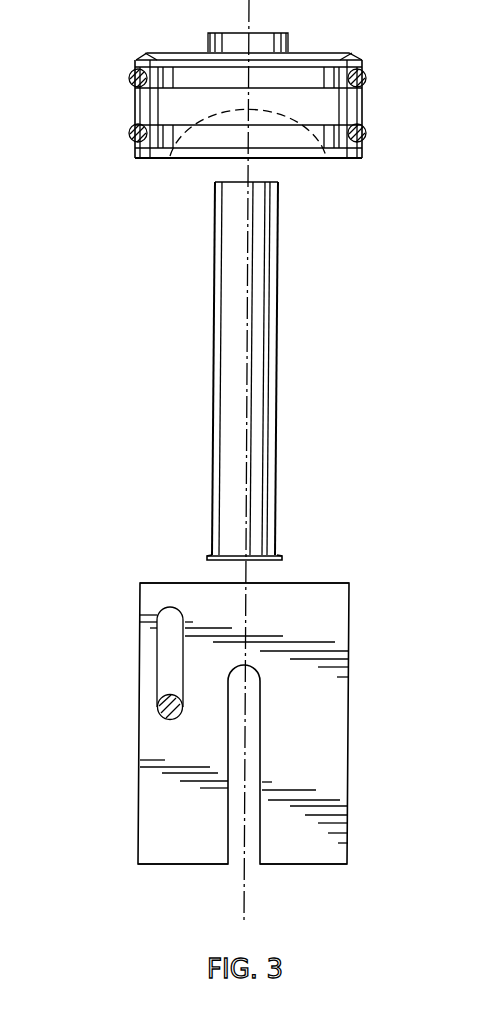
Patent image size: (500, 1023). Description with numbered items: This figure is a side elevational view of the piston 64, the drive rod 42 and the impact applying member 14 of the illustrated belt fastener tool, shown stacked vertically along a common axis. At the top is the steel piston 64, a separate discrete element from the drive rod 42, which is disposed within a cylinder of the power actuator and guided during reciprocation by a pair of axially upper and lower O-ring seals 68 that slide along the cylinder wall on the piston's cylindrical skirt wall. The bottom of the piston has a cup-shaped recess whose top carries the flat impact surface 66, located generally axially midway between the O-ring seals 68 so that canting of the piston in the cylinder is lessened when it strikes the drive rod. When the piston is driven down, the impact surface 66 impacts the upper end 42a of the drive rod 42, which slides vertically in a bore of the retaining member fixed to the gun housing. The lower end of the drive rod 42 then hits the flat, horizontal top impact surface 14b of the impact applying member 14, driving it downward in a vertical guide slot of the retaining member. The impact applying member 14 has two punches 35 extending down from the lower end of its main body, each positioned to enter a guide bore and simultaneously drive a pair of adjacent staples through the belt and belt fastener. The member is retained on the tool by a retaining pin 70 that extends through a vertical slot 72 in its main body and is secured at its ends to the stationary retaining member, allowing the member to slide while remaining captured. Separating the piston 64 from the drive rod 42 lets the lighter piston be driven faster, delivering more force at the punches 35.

The impact applying member 14 is at (321, 574).
The upper impact or force receiving end 14b is at (164, 583).
The punches 35 is at (147, 834).
The drive rod 42 is at (283, 320).
The upper end of the drive rod 42a is at (220, 172).
The piston 64 is at (398, 107).
The impact surface 66 is at (285, 150).
The O-ring seals 68 is at (128, 78).
The retaining pin 70 is at (158, 708).
The vertical slot 72 is at (170, 633).